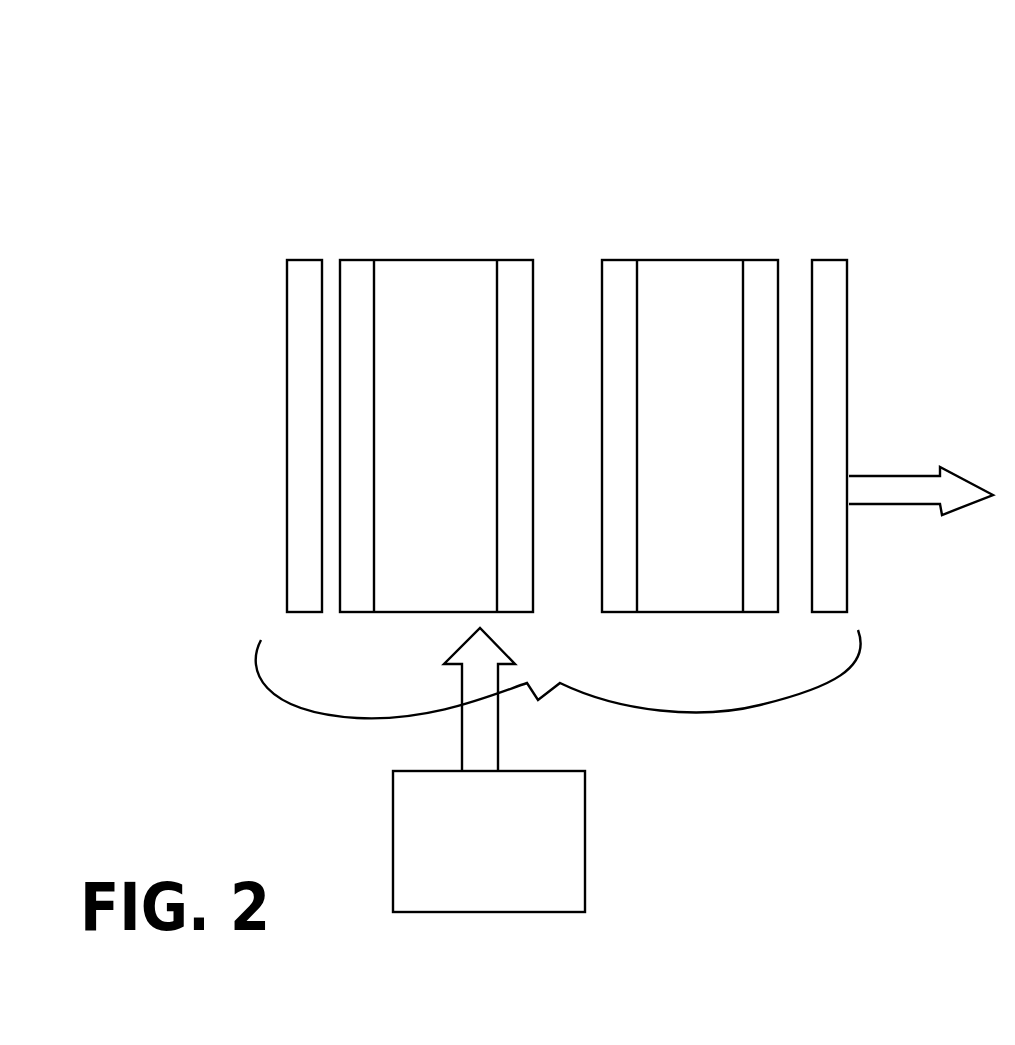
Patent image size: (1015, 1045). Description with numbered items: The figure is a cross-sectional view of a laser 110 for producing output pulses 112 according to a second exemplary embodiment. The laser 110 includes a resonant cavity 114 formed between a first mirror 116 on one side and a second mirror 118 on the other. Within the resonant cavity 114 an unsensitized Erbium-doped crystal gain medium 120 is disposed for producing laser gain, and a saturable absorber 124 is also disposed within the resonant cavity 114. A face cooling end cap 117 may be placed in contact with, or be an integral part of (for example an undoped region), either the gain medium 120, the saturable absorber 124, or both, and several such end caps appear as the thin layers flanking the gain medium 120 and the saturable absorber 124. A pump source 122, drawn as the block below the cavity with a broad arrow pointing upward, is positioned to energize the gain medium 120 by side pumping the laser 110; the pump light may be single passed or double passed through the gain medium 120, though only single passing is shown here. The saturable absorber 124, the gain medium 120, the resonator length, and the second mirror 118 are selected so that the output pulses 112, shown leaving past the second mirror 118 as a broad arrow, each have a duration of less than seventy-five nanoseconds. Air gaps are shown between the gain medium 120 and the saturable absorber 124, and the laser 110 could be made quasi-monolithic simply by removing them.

The laser 110 is at (709, 97).
The output pulses 112 is at (874, 473).
The resonant cavity 114 is at (558, 699).
The first mirror 116 is at (304, 256).
The face cooling end cap 117 is at (359, 256).
The second mirror 118 is at (839, 256).
The unsensitized Erbium-doped crystal gain medium 120 is at (445, 257).
The pump source 122 is at (590, 857).
The saturable absorber 124 is at (668, 257).